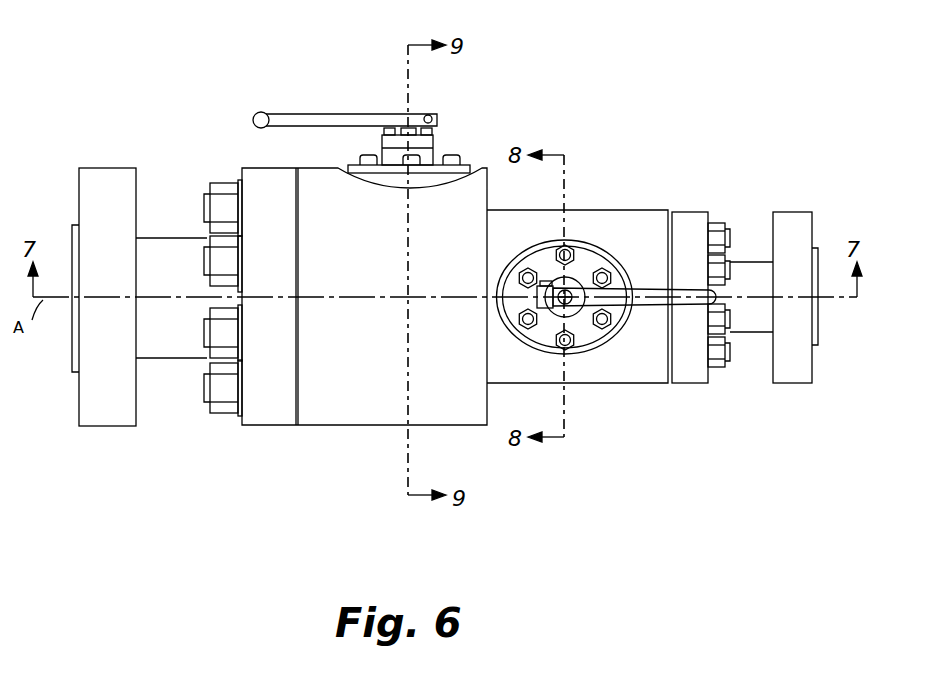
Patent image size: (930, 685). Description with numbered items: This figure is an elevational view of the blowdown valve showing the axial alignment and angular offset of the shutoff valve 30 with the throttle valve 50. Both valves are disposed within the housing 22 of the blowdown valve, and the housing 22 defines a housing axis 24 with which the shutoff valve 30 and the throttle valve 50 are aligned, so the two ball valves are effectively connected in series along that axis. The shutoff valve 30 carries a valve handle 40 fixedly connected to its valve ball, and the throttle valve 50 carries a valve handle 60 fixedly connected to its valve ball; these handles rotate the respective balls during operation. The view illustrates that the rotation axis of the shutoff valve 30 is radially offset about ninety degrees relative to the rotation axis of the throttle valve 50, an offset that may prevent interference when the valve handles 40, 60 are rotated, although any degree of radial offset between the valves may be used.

The housing 22 is at (631, 373).
The housing axis 24 is at (56, 301).
The shutoff valve 30 is at (598, 250).
The valve handle 40 is at (645, 288).
The throttle valve 50 is at (437, 149).
The valve handle 60 is at (297, 114).